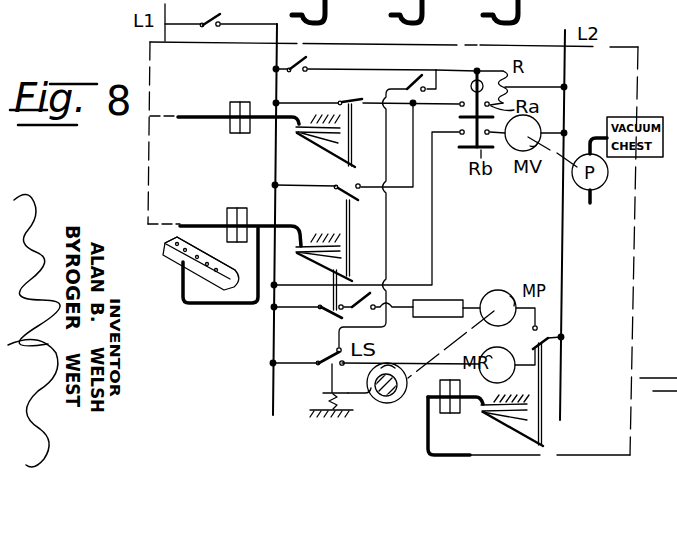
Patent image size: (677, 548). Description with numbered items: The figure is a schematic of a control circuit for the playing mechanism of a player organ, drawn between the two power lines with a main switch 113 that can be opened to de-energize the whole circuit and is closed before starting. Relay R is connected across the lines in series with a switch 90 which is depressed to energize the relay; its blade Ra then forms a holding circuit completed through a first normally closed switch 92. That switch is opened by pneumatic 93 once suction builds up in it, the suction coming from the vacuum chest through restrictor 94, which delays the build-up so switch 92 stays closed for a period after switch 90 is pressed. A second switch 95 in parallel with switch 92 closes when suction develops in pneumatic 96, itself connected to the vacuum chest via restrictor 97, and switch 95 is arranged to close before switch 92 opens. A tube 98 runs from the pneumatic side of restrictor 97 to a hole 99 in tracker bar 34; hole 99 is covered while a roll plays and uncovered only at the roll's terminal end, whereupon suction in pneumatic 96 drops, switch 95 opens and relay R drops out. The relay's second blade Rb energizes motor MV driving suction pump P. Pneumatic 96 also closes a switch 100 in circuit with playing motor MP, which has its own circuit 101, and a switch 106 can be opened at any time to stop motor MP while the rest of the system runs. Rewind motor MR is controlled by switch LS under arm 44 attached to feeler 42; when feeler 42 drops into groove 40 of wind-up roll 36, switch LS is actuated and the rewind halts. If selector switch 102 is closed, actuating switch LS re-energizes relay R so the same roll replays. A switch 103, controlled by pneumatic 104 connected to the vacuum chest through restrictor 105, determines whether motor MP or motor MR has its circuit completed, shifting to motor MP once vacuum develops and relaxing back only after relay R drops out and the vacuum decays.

The tracker bar 34 is at (166, 246).
The wind-up roll 36 is at (408, 380).
The groove or notch 40 is at (391, 362).
The feeler 42 is at (385, 404).
The arm 44 is at (323, 393).
The switch 90 is at (308, 58).
The first normally closed switch 92 is at (350, 100).
The pneumatic 93 is at (323, 148).
The restrictor 94 is at (235, 107).
The second switch 95 is at (347, 219).
The pneumatic 96 is at (313, 261).
The restrictor 97 is at (237, 212).
The tube 98 is at (257, 259).
The hole 99 is at (184, 253).
The switch 100 is at (330, 315).
The circuit 101 is at (436, 294).
The selector switch 102 is at (421, 75).
The switch 103 is at (532, 346).
The pneumatic 104 is at (512, 409).
The restrictor 105 is at (452, 413).
The switch 106 is at (364, 312).
The main switch 113 is at (222, 13).